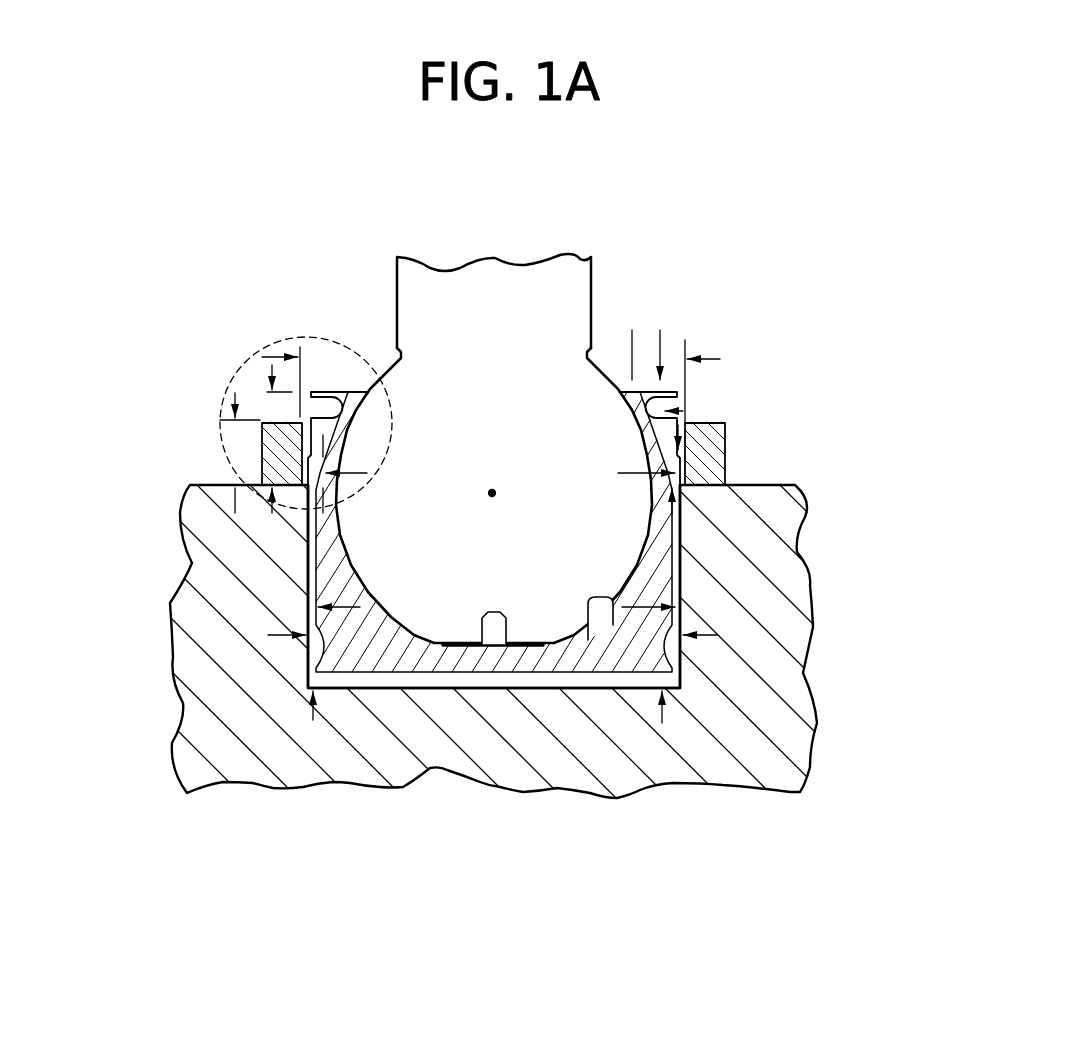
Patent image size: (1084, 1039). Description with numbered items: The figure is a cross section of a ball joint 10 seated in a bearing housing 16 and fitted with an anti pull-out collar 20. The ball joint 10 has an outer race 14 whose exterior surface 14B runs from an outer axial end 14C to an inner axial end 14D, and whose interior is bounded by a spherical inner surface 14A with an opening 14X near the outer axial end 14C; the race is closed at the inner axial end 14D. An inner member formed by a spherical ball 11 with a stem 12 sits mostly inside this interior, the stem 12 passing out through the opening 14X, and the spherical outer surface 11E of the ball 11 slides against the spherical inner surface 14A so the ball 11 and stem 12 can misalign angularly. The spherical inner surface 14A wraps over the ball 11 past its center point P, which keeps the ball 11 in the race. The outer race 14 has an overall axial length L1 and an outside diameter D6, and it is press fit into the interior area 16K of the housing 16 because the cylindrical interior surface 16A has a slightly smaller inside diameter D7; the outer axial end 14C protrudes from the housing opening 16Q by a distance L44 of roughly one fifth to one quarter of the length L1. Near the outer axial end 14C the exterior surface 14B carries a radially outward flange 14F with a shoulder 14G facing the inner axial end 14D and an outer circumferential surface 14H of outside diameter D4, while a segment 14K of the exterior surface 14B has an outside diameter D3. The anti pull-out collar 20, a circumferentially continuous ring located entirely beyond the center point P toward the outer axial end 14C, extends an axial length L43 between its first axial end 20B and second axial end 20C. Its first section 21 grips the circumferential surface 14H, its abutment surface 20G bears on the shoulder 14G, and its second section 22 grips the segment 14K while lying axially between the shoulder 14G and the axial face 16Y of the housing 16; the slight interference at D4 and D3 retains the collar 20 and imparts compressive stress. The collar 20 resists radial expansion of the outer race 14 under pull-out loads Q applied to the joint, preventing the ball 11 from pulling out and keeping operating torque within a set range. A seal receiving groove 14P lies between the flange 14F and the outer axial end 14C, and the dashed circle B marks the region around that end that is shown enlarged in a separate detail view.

The ball joint 10 is at (150, 276).
The spherical ball 11 is at (535, 413).
The spherical outer surface 11E is at (690, 605).
The stem 12 is at (567, 272).
The outer race 14 is at (307, 593).
The spherical inner surface 14A is at (613, 690).
The exterior surface 14B is at (307, 558).
The outer axial end 14C is at (330, 388).
The inner axial end 14D is at (353, 684).
The flange 14F is at (683, 411).
The shoulder 14G is at (690, 463).
The outer circumferential surface 14H is at (235, 420).
The segment 14K is at (300, 472).
The seal receiving groove 14P is at (683, 395).
The opening 14X is at (635, 352).
The bearing housing 16 is at (770, 557).
The cylindrical interior surface 16A is at (688, 684).
The interior area 16K is at (313, 720).
The opening 16Q is at (655, 540).
The axial face 16Y is at (785, 485).
The anti pull-out collar 20 is at (280, 462).
The first axial end 20B is at (272, 365).
The second axial end 20C is at (330, 525).
The abutment surface 20G is at (262, 442).
The first section 21 is at (350, 405).
The second section 22 is at (342, 498).
The enlarged region B is at (352, 338).
The center point P is at (492, 496).
The pull-out loads Q is at (490, 328).
The overall axial length L1 is at (345, 447).
The overall axial length L43 is at (300, 392).
The distance L44 is at (260, 357).
The outside diameter D3 is at (370, 474).
The outside diameter D4 is at (710, 359).
The outside diameter D6 is at (360, 608).
The inside diameter D7 is at (715, 636).